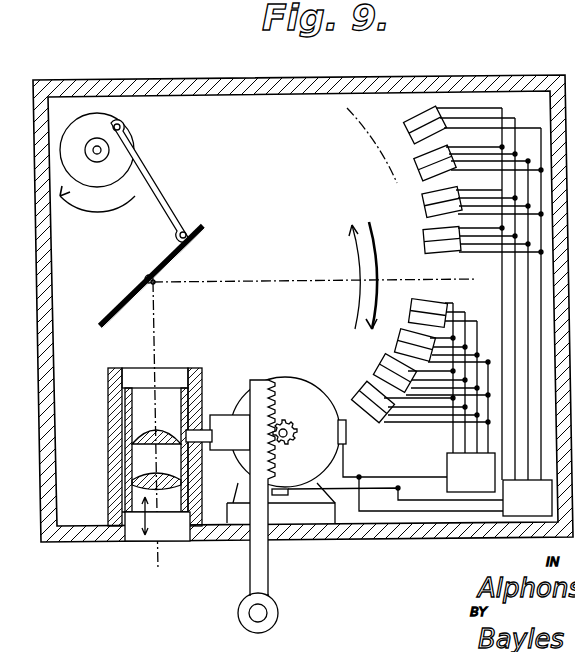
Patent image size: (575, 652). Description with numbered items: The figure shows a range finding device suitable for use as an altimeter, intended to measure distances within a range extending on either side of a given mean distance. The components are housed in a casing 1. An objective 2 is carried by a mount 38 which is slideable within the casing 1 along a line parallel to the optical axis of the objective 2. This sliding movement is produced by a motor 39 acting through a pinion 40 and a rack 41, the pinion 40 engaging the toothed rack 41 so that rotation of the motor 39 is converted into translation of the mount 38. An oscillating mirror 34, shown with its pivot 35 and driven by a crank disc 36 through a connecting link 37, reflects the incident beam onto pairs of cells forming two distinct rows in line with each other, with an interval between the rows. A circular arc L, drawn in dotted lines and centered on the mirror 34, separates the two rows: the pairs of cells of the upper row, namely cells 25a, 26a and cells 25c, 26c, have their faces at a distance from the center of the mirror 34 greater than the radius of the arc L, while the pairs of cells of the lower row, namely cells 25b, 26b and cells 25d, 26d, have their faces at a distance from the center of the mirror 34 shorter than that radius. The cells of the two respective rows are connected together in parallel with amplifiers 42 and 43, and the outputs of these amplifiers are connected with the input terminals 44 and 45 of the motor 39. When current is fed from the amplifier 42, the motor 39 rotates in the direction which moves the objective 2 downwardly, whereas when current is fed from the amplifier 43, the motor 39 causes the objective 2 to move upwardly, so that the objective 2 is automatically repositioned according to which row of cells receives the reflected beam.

The casing 1 is at (453, 90).
The objective 2 is at (168, 485).
The oscillating mirror 34 is at (178, 254).
The pivot 35 is at (148, 276).
The crank disc 36 is at (121, 125).
The connecting link 37 is at (152, 185).
The mount 38 is at (127, 452).
The motor 39 is at (300, 385).
The pinion 40 is at (287, 428).
The rack 41 is at (255, 392).
The amplifier 42 is at (538, 508).
The amplifier 43 is at (482, 483).
The input terminal 44 is at (346, 433).
The input terminal 45 is at (283, 495).
The circular arc L is at (378, 153).
The cell 25a is at (422, 236).
The cell 26a is at (424, 246).
The cell 25b is at (412, 300).
The cell 26b is at (412, 318).
The cell 25c is at (422, 210).
The cell 26c is at (420, 200).
The cell 25d is at (400, 340).
The cell 26d is at (395, 355).